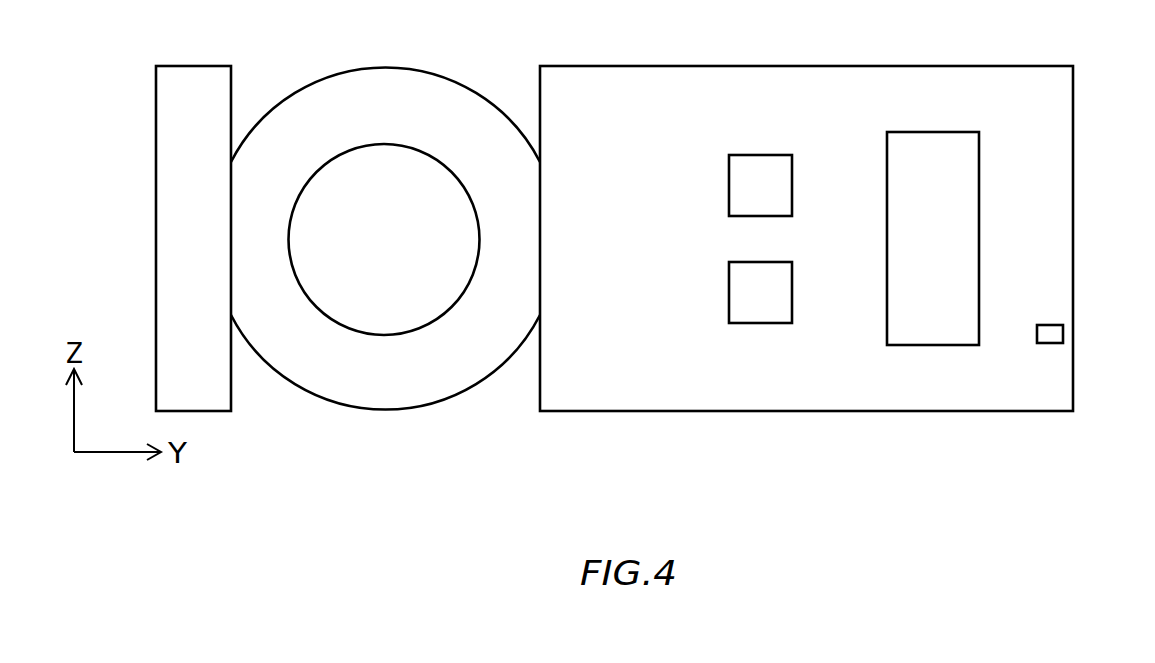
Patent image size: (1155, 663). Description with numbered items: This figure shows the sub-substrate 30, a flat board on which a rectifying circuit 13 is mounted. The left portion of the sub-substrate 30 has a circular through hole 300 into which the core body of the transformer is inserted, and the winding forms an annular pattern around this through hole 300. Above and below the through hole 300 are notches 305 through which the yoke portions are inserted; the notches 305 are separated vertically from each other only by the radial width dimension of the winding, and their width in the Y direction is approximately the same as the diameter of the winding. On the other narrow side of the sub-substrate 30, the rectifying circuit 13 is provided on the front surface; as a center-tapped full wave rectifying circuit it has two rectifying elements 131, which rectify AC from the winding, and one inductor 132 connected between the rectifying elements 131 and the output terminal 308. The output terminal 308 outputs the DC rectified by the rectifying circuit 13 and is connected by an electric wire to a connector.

The sub-substrate 30 is at (1030, 32).
The notch 305 is at (229, 108).
The through hole 300 is at (288, 230).
The rectifying circuit 13 is at (980, 127).
The rectifying element 131 is at (729, 215).
The inductor 132 is at (887, 194).
The output terminal 308 is at (1063, 331).